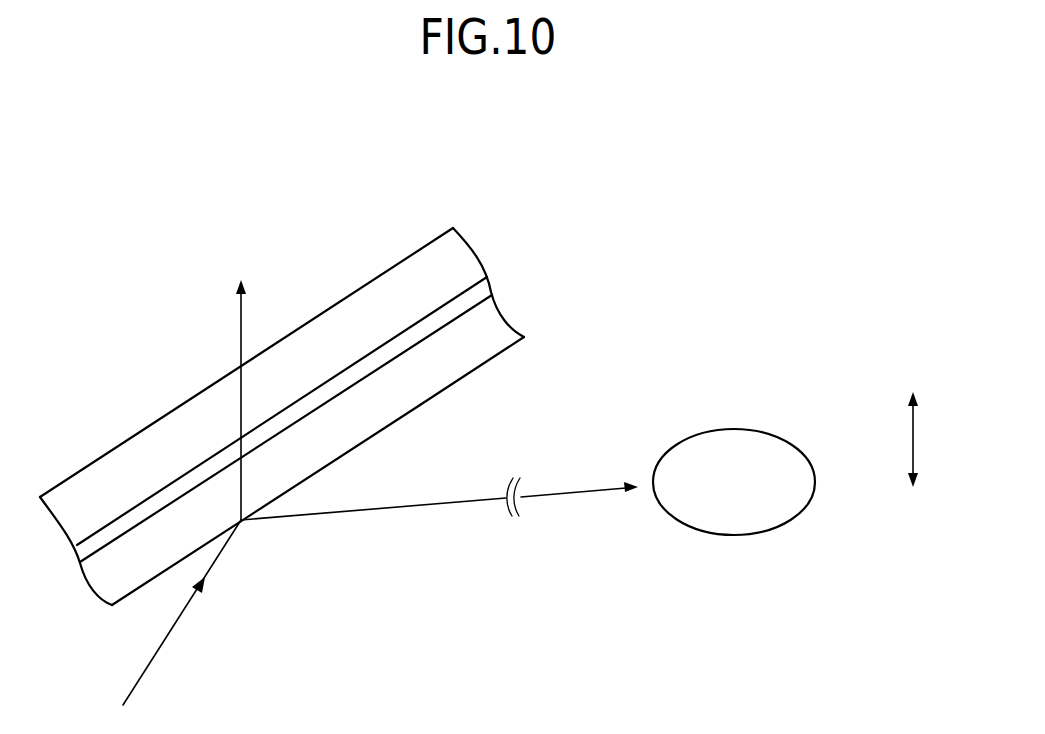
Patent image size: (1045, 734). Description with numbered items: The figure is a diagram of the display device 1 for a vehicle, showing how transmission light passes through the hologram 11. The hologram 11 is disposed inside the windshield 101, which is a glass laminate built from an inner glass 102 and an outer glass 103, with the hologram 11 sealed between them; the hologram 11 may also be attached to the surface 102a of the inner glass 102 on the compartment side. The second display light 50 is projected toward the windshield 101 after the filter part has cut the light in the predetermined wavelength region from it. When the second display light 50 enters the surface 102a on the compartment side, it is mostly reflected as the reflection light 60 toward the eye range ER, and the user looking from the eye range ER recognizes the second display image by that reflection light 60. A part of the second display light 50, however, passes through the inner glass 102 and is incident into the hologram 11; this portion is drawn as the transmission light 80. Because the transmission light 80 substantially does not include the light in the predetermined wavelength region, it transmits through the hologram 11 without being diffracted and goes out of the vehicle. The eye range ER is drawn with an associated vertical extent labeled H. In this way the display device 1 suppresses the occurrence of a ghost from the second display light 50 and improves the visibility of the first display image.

The display device for a vehicle 1 is at (342, 150).
The windshield 101 is at (411, 241).
The inner glass 102 is at (472, 365).
The surface of the inner glass on the compartment side 102a is at (377, 433).
The outer glass 103 is at (447, 252).
The hologram 11 is at (382, 358).
The transmission light 80 is at (241, 488).
The reflection light 60 is at (438, 507).
The second display light 50 is at (152, 660).
The eye range ER is at (727, 438).
The height of eye range H is at (921, 439).